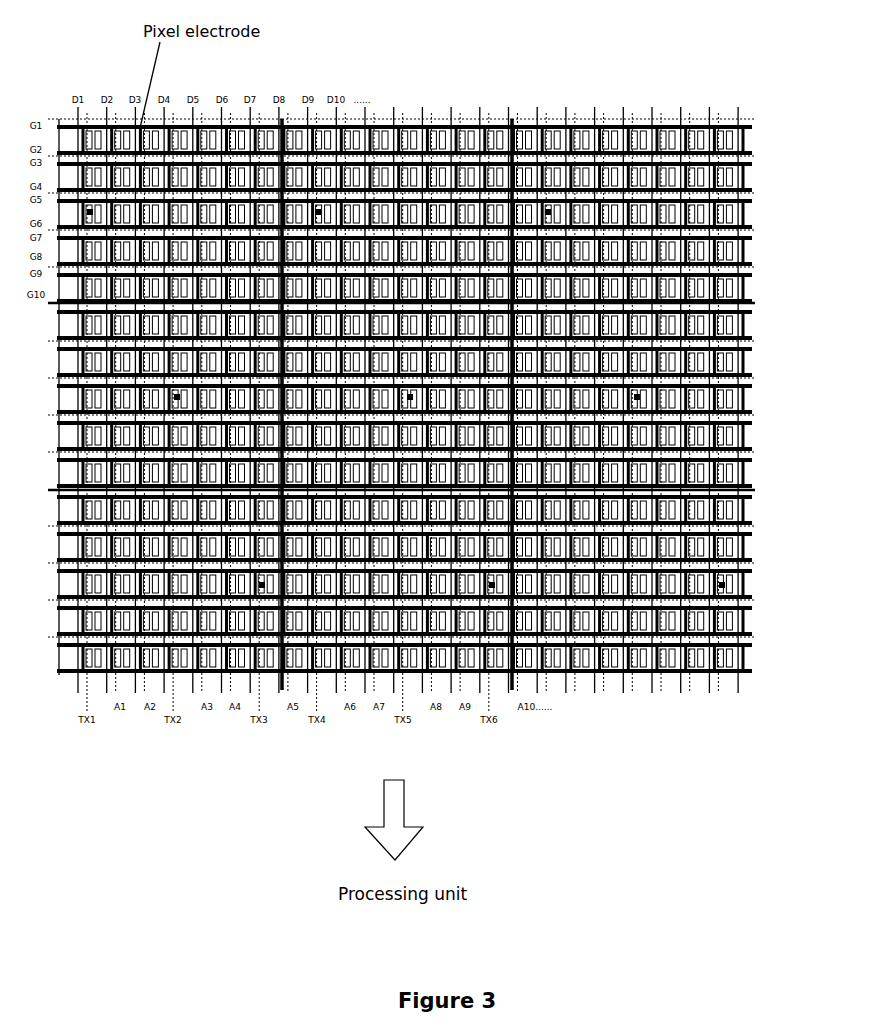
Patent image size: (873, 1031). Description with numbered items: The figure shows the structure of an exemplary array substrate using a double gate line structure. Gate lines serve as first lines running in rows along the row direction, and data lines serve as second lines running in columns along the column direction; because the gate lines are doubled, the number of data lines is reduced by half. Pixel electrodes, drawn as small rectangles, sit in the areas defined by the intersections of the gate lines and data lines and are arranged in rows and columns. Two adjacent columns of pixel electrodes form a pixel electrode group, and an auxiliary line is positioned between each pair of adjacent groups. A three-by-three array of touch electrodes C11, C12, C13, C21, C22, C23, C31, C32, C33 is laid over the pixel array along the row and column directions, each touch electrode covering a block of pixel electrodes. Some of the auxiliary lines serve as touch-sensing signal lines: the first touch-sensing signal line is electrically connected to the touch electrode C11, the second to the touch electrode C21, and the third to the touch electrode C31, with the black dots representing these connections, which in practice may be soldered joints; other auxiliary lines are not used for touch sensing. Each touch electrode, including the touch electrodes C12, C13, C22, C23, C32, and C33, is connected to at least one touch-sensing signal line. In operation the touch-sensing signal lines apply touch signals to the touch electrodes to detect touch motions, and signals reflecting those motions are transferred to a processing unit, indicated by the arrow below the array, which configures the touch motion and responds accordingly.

The touch electrode C11 is at (58, 120).
The touch electrode C12 is at (420, 140).
The touch electrode C13 is at (700, 123).
The touch electrode C21 is at (58, 397).
The touch electrode C22 is at (430, 403).
The touch electrode C23 is at (755, 392).
The touch electrode C31 is at (58, 588).
The touch electrode C32 is at (450, 678).
The touch electrode C33 is at (755, 627).